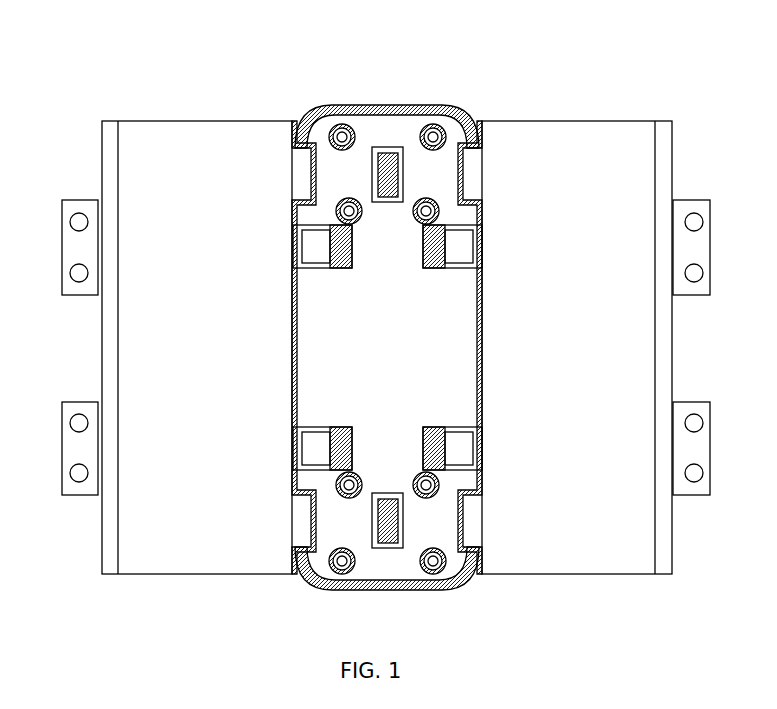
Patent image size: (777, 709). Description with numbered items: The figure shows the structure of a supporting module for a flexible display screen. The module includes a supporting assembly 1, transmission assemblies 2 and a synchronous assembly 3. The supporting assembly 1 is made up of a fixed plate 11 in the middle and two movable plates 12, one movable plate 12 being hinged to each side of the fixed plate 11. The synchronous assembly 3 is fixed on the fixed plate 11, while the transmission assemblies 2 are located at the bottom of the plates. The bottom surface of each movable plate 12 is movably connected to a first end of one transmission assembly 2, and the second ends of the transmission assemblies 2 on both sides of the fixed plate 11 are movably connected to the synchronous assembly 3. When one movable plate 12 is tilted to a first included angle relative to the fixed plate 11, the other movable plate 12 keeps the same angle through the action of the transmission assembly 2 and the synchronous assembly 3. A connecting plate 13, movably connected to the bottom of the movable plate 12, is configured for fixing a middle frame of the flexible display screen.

The supporting assembly 1 is at (410, 53).
The fixed plate 11 is at (348, 172).
The movable plate 12 is at (205, 187).
The connecting plate 13 is at (67, 208).
The transmission assembly 2 is at (317, 255).
The synchronous assembly 3 is at (330, 455).